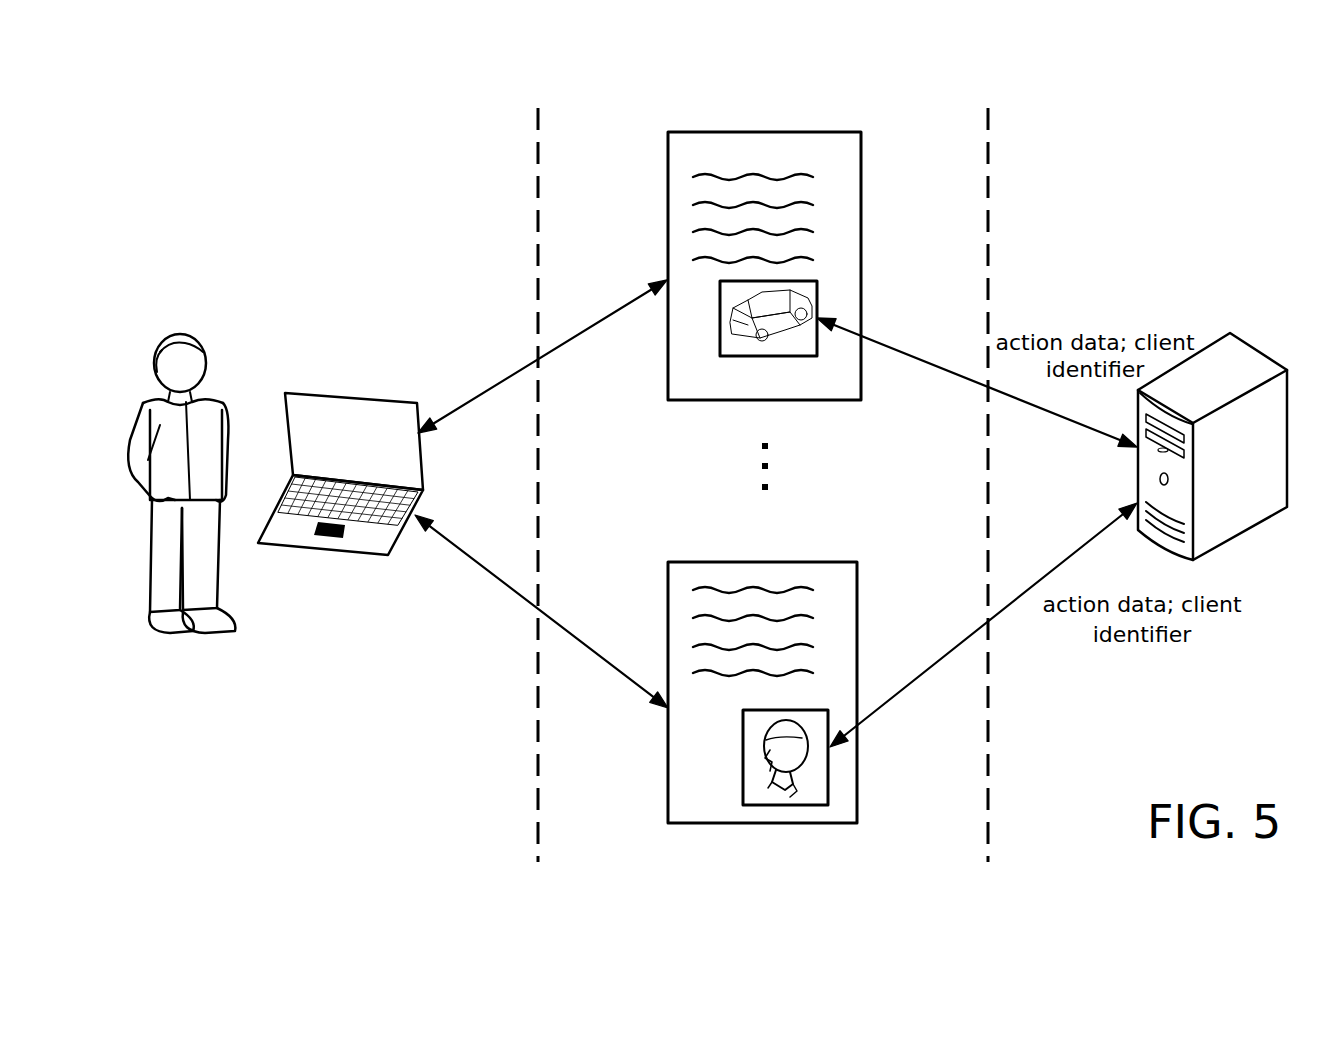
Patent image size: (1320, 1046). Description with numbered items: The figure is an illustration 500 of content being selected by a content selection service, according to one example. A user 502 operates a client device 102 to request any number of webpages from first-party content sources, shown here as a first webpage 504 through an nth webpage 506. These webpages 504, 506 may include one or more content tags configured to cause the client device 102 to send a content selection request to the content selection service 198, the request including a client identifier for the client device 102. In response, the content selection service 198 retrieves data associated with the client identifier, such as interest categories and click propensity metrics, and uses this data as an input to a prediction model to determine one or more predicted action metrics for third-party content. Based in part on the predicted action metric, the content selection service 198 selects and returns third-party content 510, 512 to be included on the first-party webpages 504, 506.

The illustration 500 is at (226, 102).
The user 502 is at (188, 338).
The client device 102 is at (350, 412).
The webpage 506 is at (724, 278).
The third-party content 510 is at (719, 346).
The webpage 504 is at (727, 715).
The third-party content 512 is at (785, 795).
The content selection service 198 is at (1250, 365).